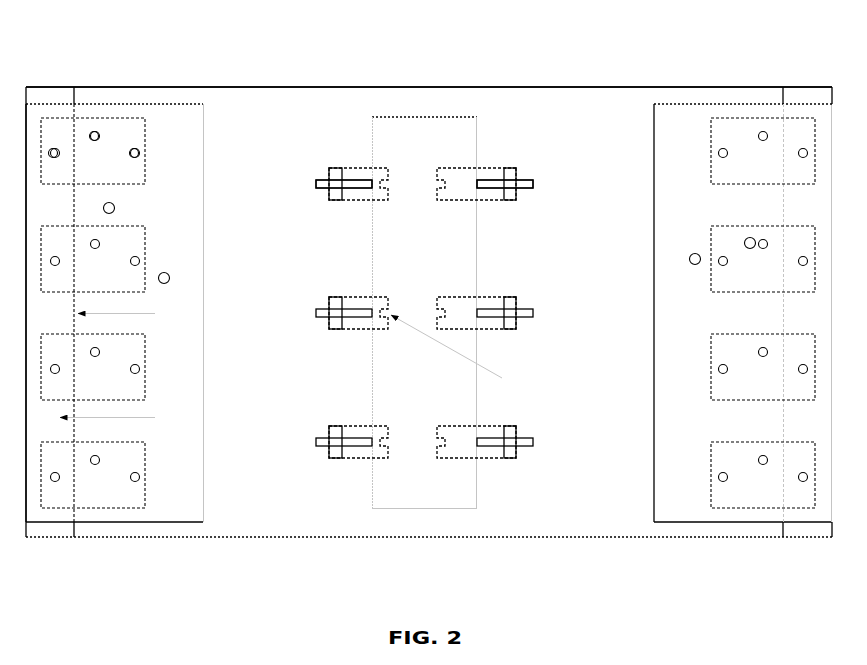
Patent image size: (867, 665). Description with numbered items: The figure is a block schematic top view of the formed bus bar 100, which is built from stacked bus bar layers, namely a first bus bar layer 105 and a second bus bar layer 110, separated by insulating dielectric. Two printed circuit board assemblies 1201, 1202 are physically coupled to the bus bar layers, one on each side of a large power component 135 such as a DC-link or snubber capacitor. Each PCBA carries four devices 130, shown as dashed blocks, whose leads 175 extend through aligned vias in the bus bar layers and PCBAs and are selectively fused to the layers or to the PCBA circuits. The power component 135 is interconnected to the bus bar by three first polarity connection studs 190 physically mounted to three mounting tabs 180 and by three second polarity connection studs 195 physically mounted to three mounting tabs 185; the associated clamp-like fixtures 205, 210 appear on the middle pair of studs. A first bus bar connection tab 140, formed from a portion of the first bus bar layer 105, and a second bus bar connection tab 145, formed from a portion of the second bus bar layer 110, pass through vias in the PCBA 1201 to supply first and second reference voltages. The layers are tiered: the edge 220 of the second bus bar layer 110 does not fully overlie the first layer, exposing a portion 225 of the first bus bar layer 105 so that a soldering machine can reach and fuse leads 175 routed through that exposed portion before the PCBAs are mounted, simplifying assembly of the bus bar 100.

The bus bar 100 is at (704, 53).
The first bus bar layer 105 is at (53, 96).
The second bus bar layer 110 is at (243, 120).
The printed circuit board assembly 1201 is at (169, 120).
The printed circuit board assembly 1202 is at (679, 120).
The device 130 is at (106, 120).
The large power component 135 is at (429, 117).
The first bus bar connection tab 140 is at (115, 209).
The second bus bar connection tab 145 is at (170, 276).
The lead 175 is at (57, 155).
The mounting tab 180 is at (512, 168).
The mounting tab 185 is at (335, 169).
The first polarity connection stud 190 is at (533, 183).
The second polarity connection stud 195 is at (315, 182).
The clamp bracket 205 is at (485, 296).
The clamp bracket 210 is at (358, 295).
The edge 220 is at (134, 313).
The exposed portion 225 is at (300, 372).